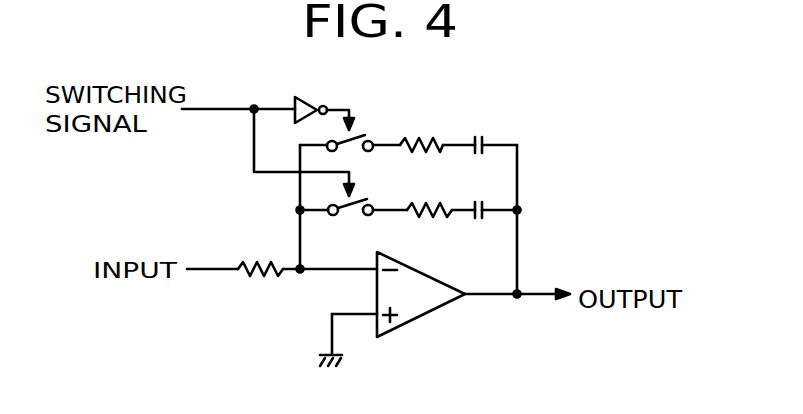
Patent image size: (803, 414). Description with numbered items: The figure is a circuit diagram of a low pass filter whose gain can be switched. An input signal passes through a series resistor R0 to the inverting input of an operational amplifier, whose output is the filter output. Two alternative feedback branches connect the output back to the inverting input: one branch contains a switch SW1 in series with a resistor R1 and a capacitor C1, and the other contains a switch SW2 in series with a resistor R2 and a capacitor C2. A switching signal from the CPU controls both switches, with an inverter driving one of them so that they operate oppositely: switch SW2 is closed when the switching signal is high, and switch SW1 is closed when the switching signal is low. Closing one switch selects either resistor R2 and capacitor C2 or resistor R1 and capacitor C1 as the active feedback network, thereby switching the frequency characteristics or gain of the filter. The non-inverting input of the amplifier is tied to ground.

The switch SW1 is at (362, 116).
The switch SW2 is at (365, 222).
The resistor R1 is at (421, 130).
The resistor R2 is at (429, 195).
The capacitor C1 is at (479, 131).
The capacitor C2 is at (481, 196).
The input resistor R0 is at (260, 255).